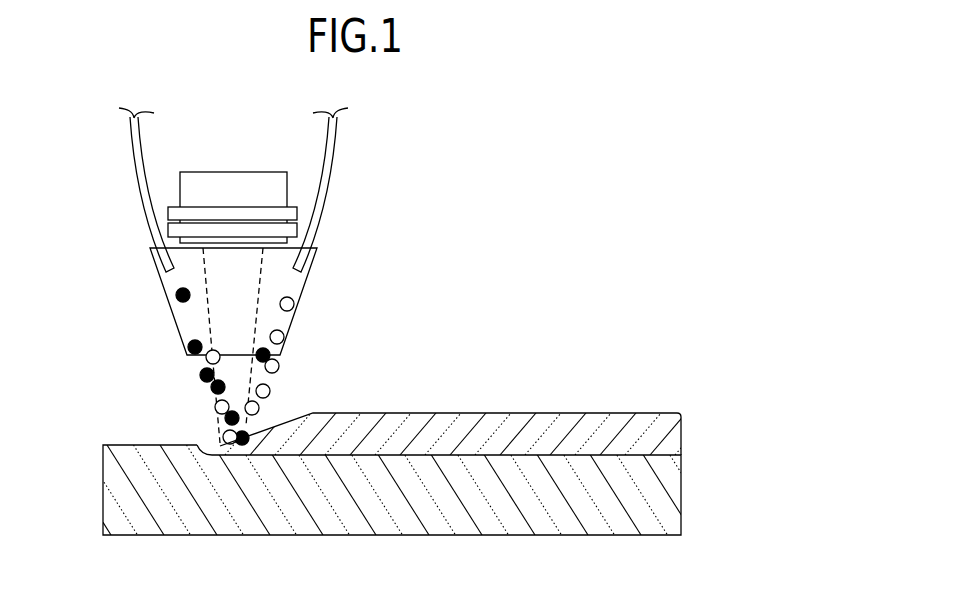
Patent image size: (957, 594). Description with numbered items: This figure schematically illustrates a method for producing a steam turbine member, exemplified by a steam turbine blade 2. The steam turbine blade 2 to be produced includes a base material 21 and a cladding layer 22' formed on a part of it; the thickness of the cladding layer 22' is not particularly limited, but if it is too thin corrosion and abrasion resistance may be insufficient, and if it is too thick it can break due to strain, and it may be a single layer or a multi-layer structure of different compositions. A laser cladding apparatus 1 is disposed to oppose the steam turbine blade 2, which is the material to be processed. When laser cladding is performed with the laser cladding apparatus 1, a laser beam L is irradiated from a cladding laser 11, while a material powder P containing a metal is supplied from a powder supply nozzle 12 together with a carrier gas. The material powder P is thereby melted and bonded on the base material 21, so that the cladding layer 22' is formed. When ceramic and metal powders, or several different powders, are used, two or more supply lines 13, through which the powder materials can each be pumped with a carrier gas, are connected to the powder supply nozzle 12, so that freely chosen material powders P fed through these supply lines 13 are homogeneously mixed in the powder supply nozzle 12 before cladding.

The laser cladding apparatus 1 is at (107, 152).
The cladding laser 11 is at (247, 178).
The powder supply nozzle 12 is at (275, 293).
The supply lines 13 is at (147, 207).
The material powder P is at (202, 373).
The laser beam L is at (253, 377).
The steam turbine blade 2 is at (708, 410).
The base material 21 is at (660, 487).
The cladding layer 22' is at (480, 395).